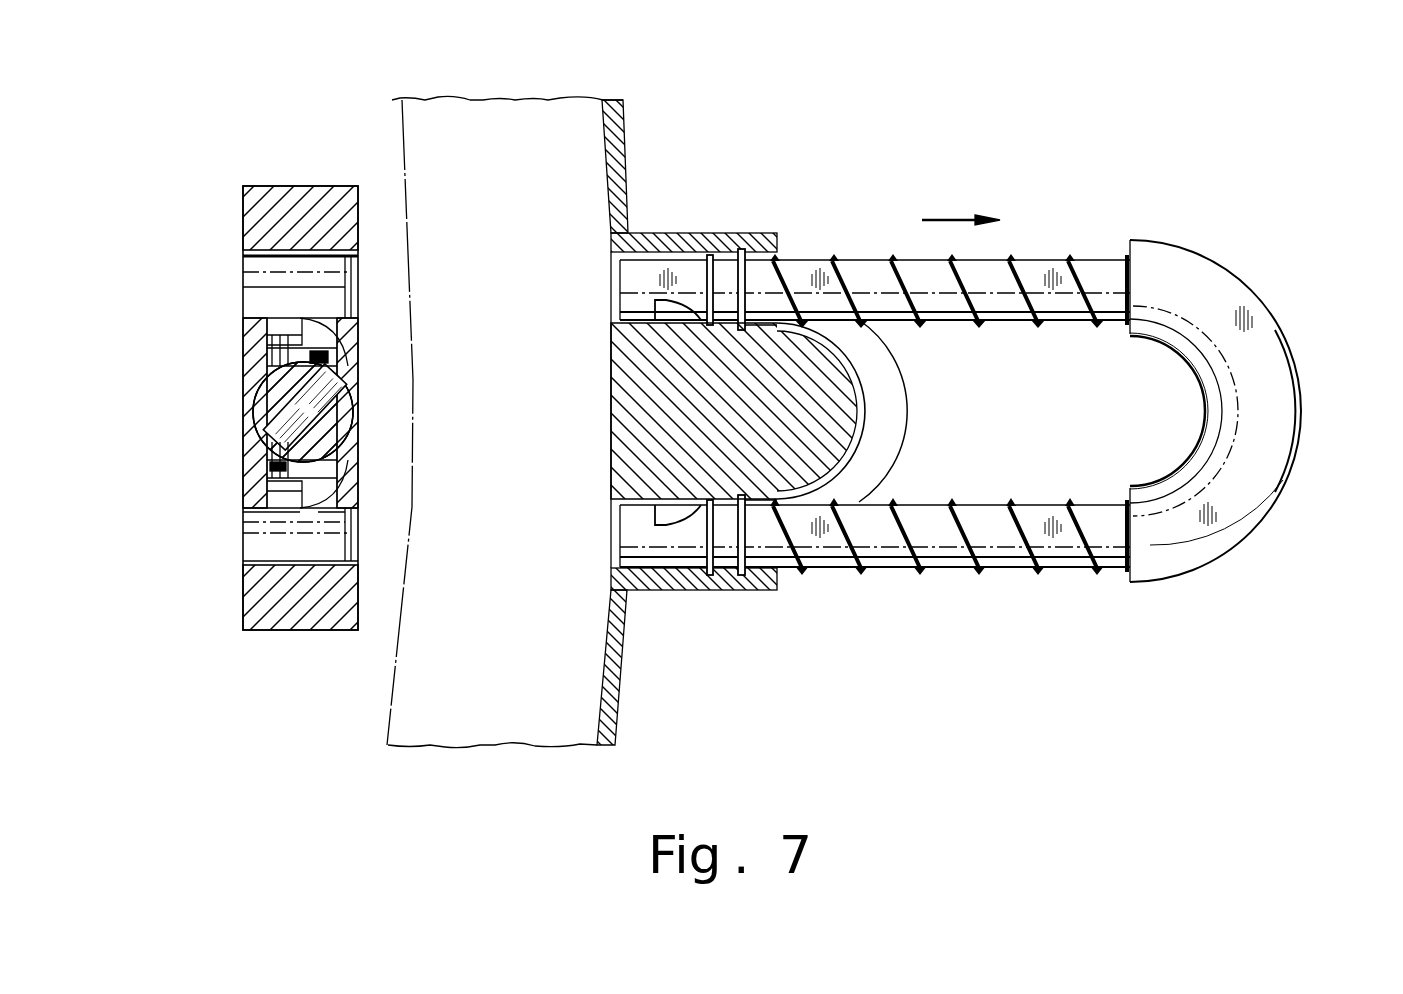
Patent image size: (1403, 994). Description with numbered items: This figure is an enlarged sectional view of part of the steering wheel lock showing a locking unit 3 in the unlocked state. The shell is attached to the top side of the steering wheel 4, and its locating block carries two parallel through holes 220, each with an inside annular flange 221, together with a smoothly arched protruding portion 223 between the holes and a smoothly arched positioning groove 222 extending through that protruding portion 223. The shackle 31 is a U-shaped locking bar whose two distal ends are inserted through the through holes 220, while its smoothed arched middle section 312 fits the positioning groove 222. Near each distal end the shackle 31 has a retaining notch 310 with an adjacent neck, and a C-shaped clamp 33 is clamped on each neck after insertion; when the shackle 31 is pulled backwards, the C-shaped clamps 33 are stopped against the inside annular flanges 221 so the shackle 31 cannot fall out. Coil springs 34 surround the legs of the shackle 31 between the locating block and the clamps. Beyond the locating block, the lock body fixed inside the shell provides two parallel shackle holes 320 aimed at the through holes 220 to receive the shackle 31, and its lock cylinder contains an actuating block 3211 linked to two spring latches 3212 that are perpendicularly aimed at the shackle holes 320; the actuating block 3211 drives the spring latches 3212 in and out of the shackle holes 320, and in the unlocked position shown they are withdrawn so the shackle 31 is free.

The locking unit 3 is at (240, 400).
The steering wheel 4 is at (503, 112).
The shackle 31 is at (1235, 268).
The C-shaped clamp 33 is at (700, 560).
The coil spring 34 is at (963, 548).
The through hole 220 is at (690, 258).
The inside annular flange 221 is at (732, 258).
The smoothly arched positioning groove 222 is at (890, 440).
The smoothly arched protruding portion 223 is at (905, 384).
The retaining notch 310 is at (660, 512).
The smoothed arched middle section 312 is at (1288, 420).
The shackle hole 320 is at (273, 278).
The actuating block 3211 is at (287, 403).
The spring latch 3212 is at (270, 347).